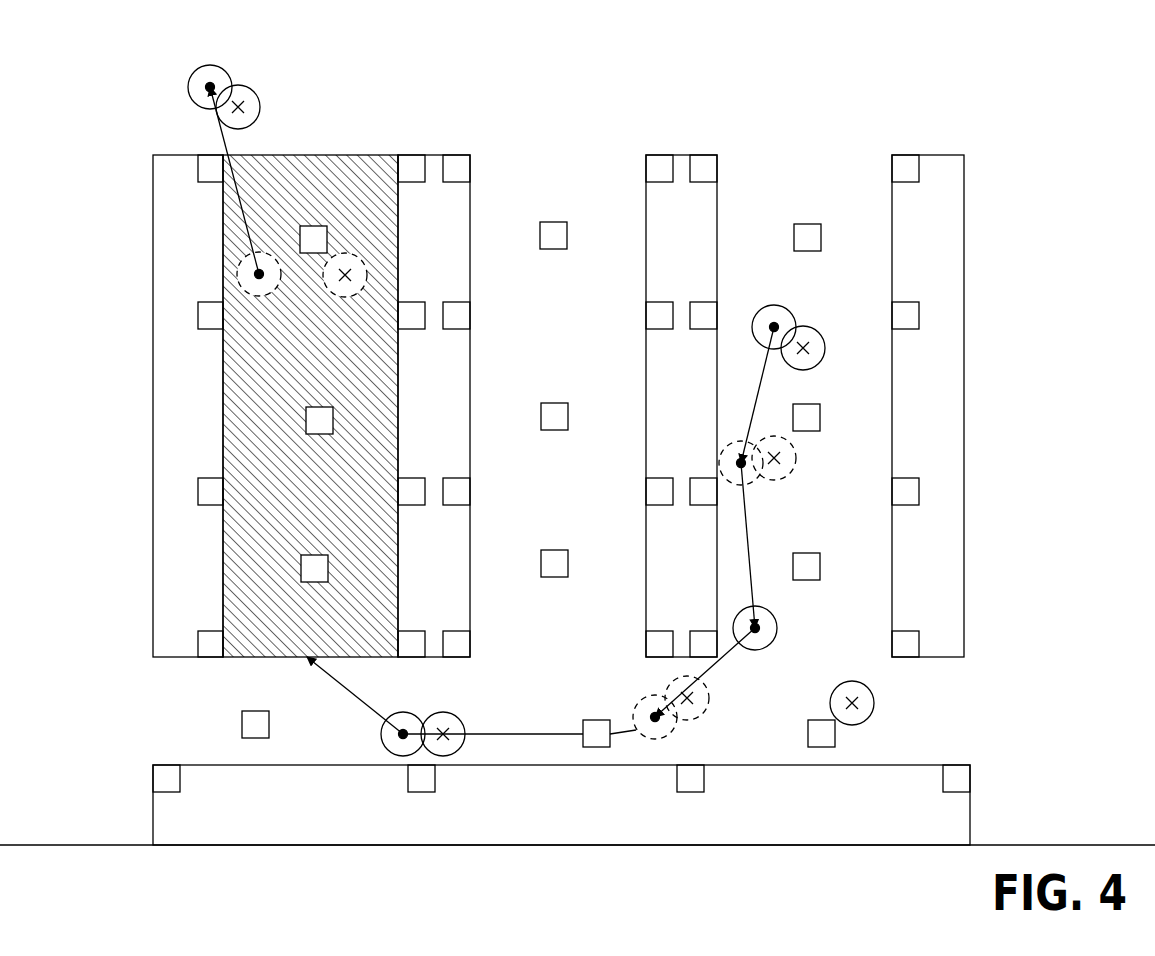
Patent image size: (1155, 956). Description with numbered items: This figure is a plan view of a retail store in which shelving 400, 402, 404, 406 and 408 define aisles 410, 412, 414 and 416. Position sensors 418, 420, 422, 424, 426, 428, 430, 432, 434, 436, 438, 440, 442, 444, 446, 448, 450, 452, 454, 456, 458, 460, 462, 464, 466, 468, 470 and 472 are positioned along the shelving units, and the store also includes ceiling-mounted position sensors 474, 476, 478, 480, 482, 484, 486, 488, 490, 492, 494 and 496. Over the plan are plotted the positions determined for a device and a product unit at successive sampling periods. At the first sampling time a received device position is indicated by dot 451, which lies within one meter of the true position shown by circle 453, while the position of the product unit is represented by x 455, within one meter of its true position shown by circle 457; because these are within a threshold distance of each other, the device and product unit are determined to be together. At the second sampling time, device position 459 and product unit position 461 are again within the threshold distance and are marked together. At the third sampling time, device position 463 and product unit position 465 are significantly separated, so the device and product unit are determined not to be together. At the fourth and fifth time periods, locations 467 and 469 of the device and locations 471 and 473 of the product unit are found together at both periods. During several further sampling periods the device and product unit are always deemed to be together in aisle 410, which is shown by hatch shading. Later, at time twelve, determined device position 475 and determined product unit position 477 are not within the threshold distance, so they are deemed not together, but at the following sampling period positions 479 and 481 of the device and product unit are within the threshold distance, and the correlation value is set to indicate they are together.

The shelving 400 is at (157, 155).
The shelving 402 is at (438, 155).
The shelving 404 is at (680, 155).
The shelving 406 is at (950, 155).
The shelving 408 is at (970, 818).
The aisle 410 is at (297, 145).
The aisle 412 is at (575, 135).
The aisle 414 is at (793, 143).
The aisle 416 is at (962, 700).
The position sensor 418 is at (197, 180).
The position sensor 420 is at (198, 316).
The position sensor 422 is at (198, 488).
The position sensor 424 is at (210, 657).
The position sensor 426 is at (405, 155).
The position sensor 428 is at (415, 302).
The position sensor 430 is at (415, 478).
The position sensor 432 is at (415, 631).
The position sensor 434 is at (463, 155).
The position sensor 436 is at (470, 318).
The position sensor 438 is at (470, 492).
The position sensor 440 is at (470, 658).
The position sensor 442 is at (665, 155).
The position sensor 444 is at (646, 316).
The position sensor 446 is at (646, 484).
The position sensor 448 is at (646, 640).
The position sensor 450 is at (718, 165).
The position sensor 452 is at (710, 302).
The position sensor 454 is at (710, 478).
The position sensor 456 is at (710, 631).
The position sensor 458 is at (898, 155).
The position sensor 460 is at (919, 316).
The position sensor 462 is at (919, 492).
The position sensor 464 is at (919, 638).
The position sensor 466 is at (960, 775).
The position sensor 468 is at (705, 785).
The position sensor 470 is at (435, 792).
The position sensor 472 is at (178, 792).
The ceiling-mounted position sensor 474 is at (313, 226).
The ceiling-mounted position sensor 476 is at (325, 434).
The ceiling-mounted position sensor 478 is at (313, 555).
The ceiling-mounted position sensor 480 is at (553, 222).
The ceiling-mounted position sensor 482 is at (553, 403).
The ceiling-mounted position sensor 484 is at (542, 577).
The ceiling-mounted position sensor 486 is at (807, 251).
The ceiling-mounted position sensor 488 is at (803, 404).
The ceiling-mounted position sensor 490 is at (821, 560).
The ceiling-mounted position sensor 492 is at (808, 725).
The ceiling-mounted position sensor 494 is at (598, 748).
The ceiling-mounted position sensor 496 is at (242, 725).
The dot 451 is at (768, 312).
The circle 453 is at (778, 305).
The x 455 is at (823, 348).
The circle 457 is at (818, 367).
The device position 459 is at (749, 483).
The product unit position 461 is at (795, 457).
The device position 463 is at (777, 628).
The product unit position 465 is at (852, 725).
The location 467 is at (648, 700).
The location 469 is at (382, 736).
The location 471 is at (703, 712).
The location 473 is at (443, 712).
The determined device position 475 is at (264, 296).
The determined product unit position 477 is at (347, 297).
The position 479 is at (207, 66).
The position 481 is at (242, 85).